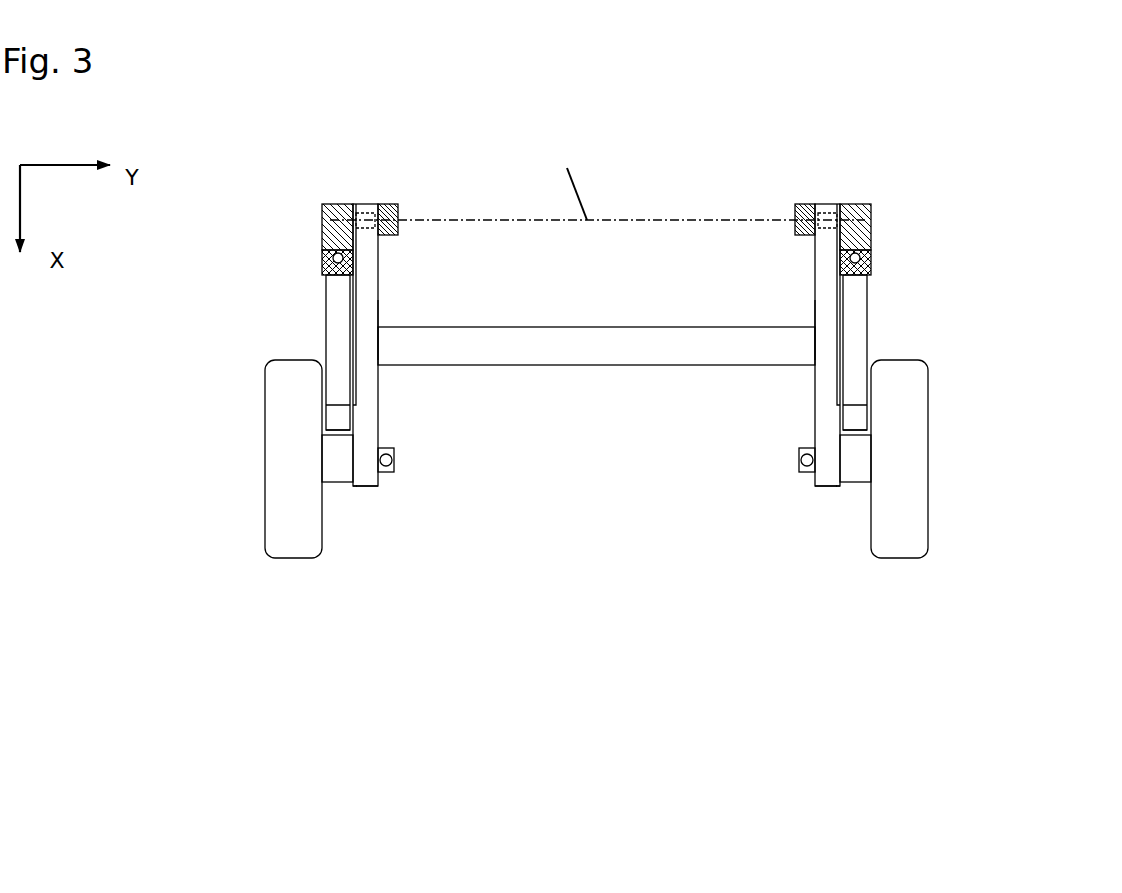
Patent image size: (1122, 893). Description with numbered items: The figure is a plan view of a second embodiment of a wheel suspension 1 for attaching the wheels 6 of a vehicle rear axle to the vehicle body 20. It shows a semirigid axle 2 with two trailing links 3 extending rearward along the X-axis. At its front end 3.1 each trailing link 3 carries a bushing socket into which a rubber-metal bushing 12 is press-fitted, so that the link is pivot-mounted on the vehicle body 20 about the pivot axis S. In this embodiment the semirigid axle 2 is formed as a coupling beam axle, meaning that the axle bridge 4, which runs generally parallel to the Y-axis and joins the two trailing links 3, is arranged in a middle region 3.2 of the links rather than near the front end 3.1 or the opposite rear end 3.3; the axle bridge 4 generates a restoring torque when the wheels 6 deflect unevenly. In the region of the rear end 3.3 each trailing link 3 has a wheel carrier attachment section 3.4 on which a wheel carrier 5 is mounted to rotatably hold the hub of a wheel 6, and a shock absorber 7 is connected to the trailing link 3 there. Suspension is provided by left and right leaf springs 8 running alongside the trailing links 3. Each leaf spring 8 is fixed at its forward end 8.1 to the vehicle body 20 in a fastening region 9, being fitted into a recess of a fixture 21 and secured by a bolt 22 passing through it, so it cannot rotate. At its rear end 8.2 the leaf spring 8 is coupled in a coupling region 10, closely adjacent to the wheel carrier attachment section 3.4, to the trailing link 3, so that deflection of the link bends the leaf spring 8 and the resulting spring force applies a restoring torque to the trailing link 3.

The wheel suspension 1 is at (1000, 218).
The semirigid axle 2 is at (590, 292).
The trailing link 3 is at (361, 353).
The front end 3.1 is at (381, 195).
The middle region 3.2 is at (393, 321).
The rear end 3.3 is at (370, 493).
The wheel carrier attachment section 3.4 is at (352, 491).
The axle bridge 4 is at (576, 359).
The wheel carrier 5 is at (331, 468).
The wheel 6 is at (286, 481).
The shock absorber 7 is at (395, 461).
The leaf spring 8 is at (331, 349).
The forward end 8.1 is at (597, 235).
The fastening region 9 is at (602, 235).
The rear end 8.2 is at (605, 467).
The coupling region 10 is at (321, 425).
The rubber-metal bushing 12 is at (363, 212).
The vehicle body 20 is at (602, 264).
The fixture 21 is at (318, 273).
The bolt 22 is at (335, 255).